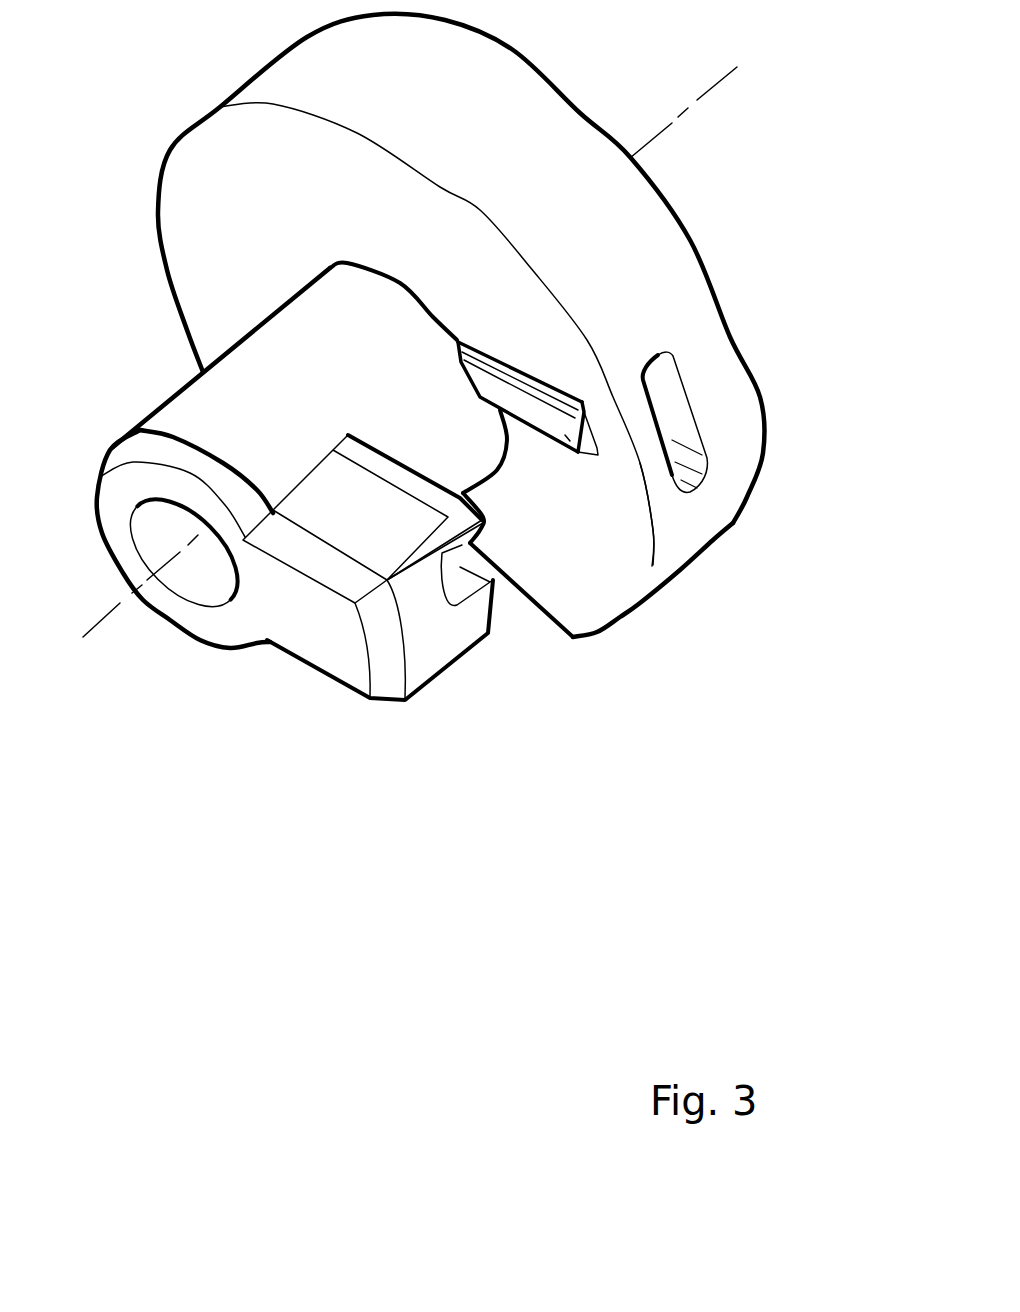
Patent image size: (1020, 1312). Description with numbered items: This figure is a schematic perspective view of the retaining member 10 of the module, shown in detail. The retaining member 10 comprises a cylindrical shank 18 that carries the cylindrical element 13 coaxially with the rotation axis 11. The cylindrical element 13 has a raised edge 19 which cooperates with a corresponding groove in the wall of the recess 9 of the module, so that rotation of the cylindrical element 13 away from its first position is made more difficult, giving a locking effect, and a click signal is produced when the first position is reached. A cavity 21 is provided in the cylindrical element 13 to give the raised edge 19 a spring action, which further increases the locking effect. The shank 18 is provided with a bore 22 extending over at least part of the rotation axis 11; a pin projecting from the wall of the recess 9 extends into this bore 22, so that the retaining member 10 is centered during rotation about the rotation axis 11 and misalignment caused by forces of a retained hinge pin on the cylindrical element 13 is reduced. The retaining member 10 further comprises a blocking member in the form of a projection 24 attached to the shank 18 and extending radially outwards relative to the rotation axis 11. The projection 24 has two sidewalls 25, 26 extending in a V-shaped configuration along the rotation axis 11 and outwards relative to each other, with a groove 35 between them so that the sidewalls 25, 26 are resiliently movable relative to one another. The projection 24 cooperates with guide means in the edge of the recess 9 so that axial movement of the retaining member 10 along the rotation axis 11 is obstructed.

The recess 9 is at (538, 608).
The retaining member 10 is at (177, 812).
The rotation axis 11 is at (720, 83).
The cylindrical element 13 is at (652, 257).
The cylindrical shank 18 is at (203, 395).
The raised edge 19 is at (651, 560).
The cavity 21 is at (677, 407).
The bore 22 is at (190, 585).
The projection 24 is at (345, 653).
The sidewall 25 is at (383, 503).
The sidewall 26 is at (447, 667).
The groove 35 is at (463, 567).